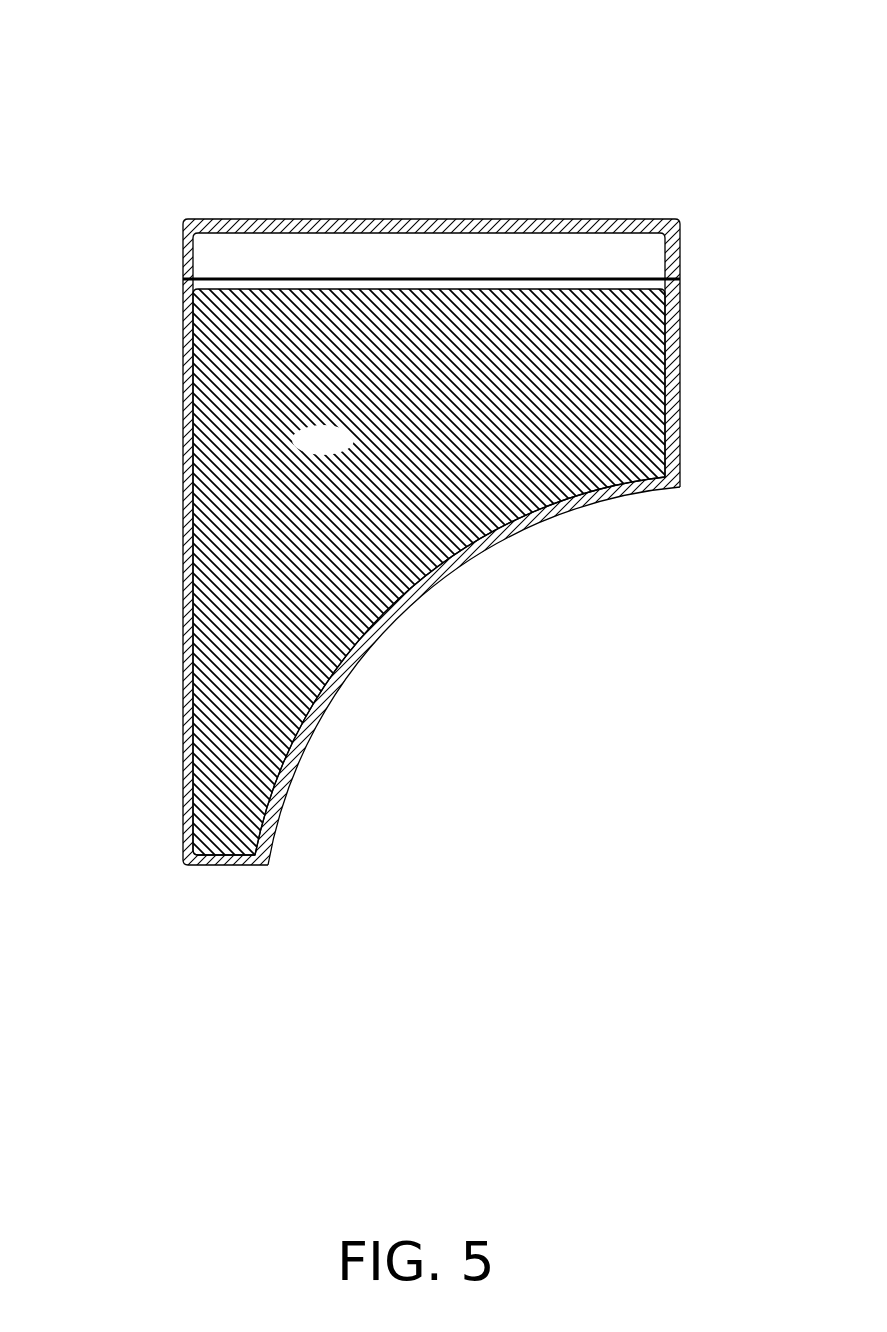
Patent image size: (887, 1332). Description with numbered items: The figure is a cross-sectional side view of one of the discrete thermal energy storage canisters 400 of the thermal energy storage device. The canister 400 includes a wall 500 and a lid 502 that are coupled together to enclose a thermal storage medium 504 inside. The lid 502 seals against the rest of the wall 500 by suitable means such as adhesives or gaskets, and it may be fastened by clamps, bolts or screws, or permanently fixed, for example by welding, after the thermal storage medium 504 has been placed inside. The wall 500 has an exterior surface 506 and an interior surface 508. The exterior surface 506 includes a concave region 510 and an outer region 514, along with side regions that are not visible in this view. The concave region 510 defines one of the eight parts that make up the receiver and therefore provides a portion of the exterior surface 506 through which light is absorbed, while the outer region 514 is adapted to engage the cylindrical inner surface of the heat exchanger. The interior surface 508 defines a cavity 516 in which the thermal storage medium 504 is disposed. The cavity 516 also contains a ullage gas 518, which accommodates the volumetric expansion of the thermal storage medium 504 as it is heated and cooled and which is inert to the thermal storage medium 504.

The canister 400 is at (86, 88).
The wall 500 is at (668, 370).
The lid 502 is at (670, 247).
The thermal storage medium 504 is at (429, 572).
The exterior surface 506 is at (183, 250).
The interior surface 508 is at (218, 234).
The concave region 510 is at (505, 548).
The outer region 514 is at (183, 527).
The cavity 516 is at (460, 248).
The ullage gas 518 is at (429, 256).